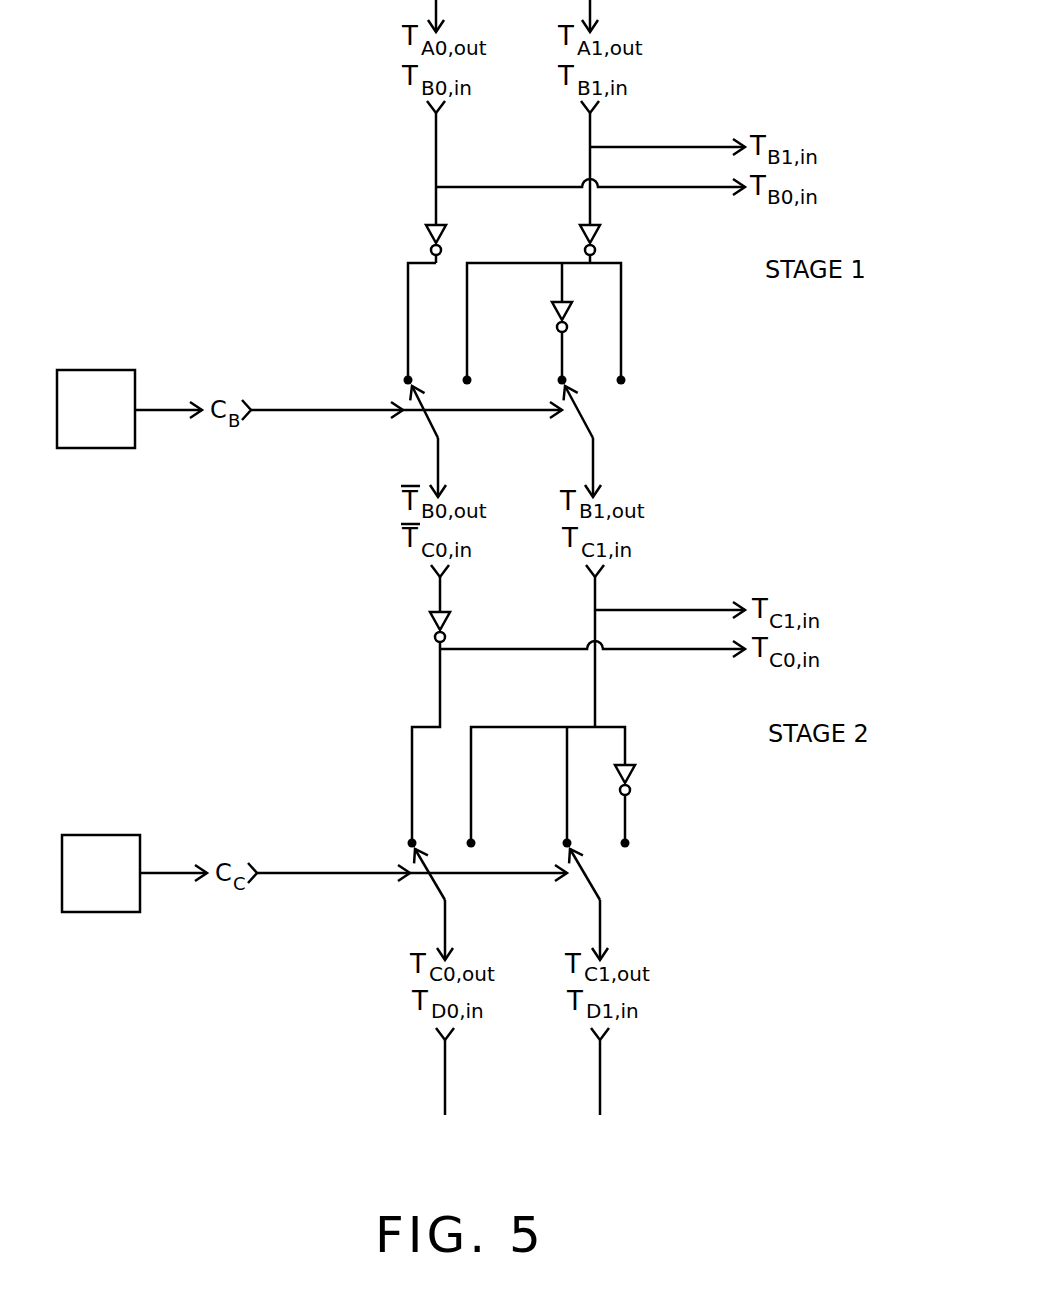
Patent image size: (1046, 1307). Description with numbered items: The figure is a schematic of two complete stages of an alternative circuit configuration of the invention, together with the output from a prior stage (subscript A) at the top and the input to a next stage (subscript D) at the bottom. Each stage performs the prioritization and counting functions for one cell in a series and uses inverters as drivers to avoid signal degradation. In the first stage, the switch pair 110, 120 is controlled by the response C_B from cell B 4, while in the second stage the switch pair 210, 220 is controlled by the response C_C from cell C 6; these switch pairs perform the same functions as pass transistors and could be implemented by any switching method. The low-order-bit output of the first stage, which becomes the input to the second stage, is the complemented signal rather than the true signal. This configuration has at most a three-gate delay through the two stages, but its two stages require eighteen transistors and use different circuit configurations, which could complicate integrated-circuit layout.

The cell B 4 is at (96, 452).
The cell C 6 is at (101, 918).
The switch 110 is at (389, 439).
The switch 120 is at (633, 439).
The switch 210 is at (395, 902).
The switch 220 is at (633, 902).